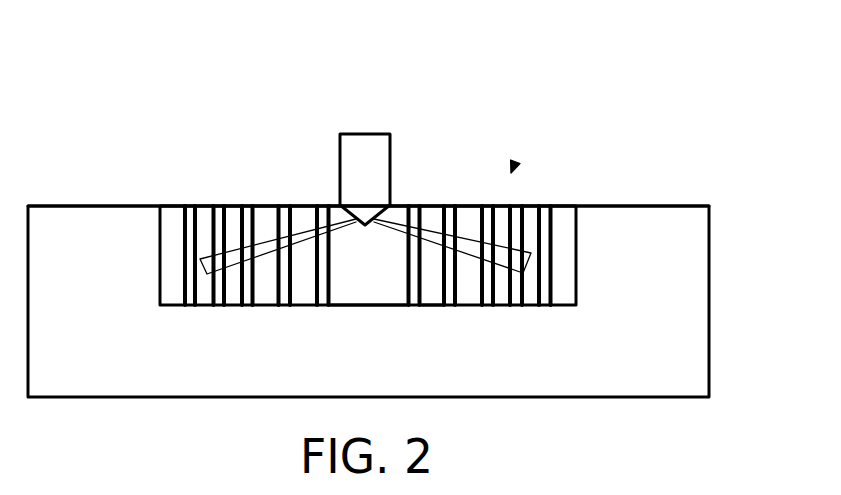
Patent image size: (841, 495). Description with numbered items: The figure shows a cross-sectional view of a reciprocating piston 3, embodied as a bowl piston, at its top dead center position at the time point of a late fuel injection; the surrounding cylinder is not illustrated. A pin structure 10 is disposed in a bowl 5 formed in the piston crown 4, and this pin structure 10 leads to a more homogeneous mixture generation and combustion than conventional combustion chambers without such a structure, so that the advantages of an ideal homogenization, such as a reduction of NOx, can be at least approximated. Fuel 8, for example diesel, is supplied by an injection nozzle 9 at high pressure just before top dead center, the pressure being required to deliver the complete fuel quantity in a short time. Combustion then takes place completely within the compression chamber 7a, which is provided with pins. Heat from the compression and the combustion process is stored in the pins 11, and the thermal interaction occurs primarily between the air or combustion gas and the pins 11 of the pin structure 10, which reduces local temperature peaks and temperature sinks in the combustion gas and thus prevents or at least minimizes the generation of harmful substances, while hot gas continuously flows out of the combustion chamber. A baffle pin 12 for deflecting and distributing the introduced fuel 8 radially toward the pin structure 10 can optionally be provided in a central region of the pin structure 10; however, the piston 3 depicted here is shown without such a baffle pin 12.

The piston 3 is at (655, 370).
The piston crown 4 is at (665, 293).
The bowl 5 is at (565, 222).
The compression chamber 7a is at (347, 260).
The fuel 8 is at (427, 235).
The injection nozzle 9 is at (355, 150).
The pin structure 10 is at (513, 168).
The pins 11 is at (192, 205).
The baffle pin 12 is at (370, 278).